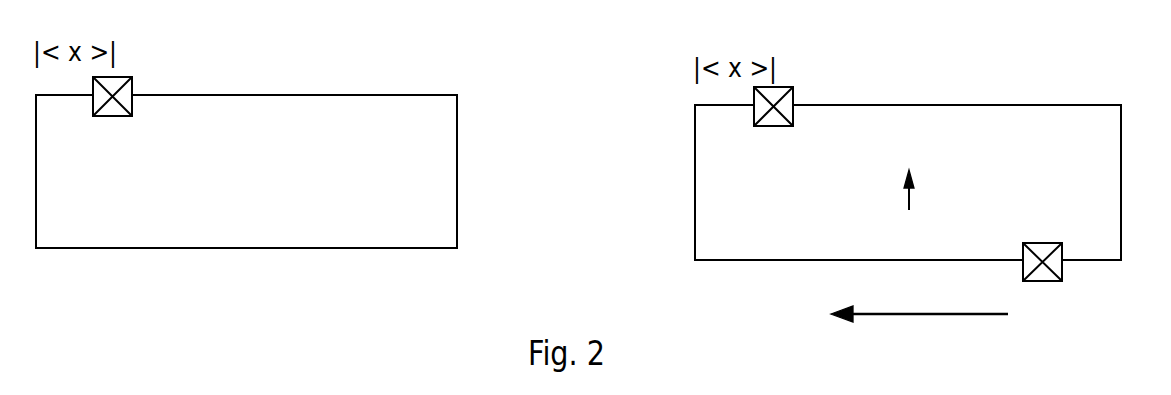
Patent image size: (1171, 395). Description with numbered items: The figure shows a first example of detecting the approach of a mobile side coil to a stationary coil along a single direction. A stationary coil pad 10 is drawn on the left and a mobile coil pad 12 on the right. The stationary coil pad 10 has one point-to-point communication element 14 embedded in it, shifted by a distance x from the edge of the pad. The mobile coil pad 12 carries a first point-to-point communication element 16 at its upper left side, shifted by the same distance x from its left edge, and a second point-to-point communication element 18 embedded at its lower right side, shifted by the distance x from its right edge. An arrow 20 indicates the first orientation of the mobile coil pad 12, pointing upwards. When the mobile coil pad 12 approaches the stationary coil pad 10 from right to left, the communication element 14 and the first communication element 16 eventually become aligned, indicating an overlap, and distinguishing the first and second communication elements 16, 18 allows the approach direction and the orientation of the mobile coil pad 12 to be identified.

The stationary coil pad 10 is at (332, 95).
The mobile coil pad 12 is at (993, 105).
The point-to-point communication element 14 is at (131, 77).
The first point-to-point communication element 16 is at (792, 87).
The second point-to-point communication element 18 is at (1046, 243).
The arrow 20 is at (909, 200).